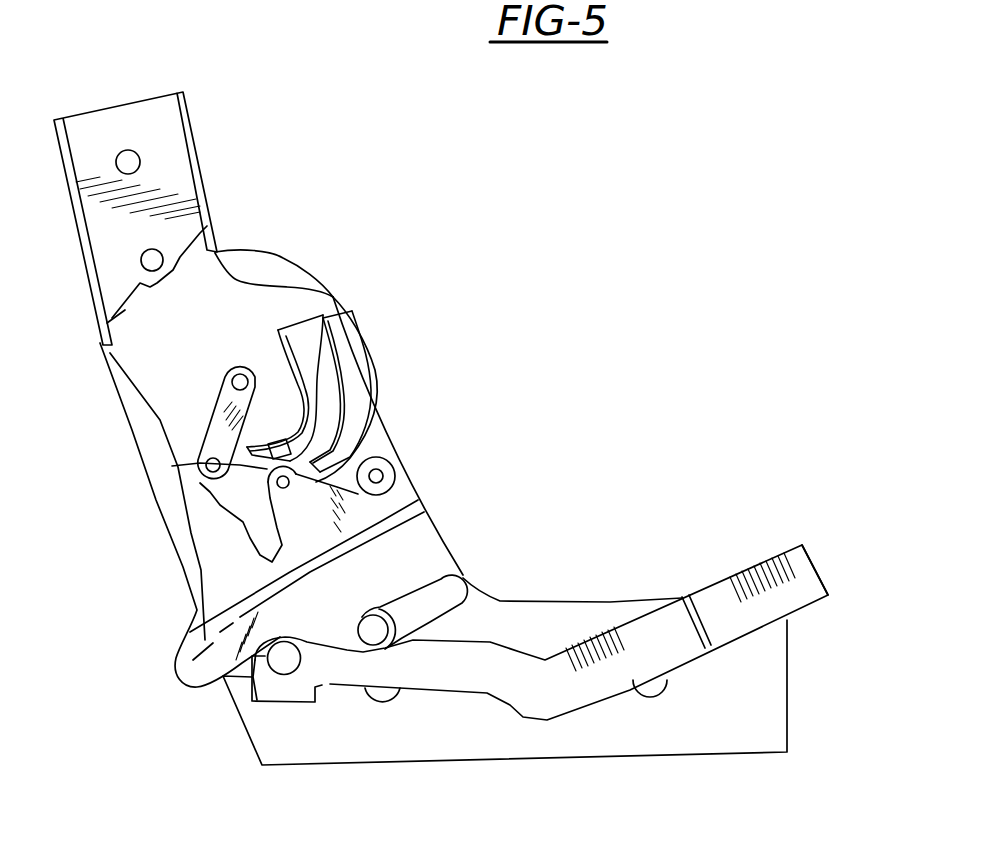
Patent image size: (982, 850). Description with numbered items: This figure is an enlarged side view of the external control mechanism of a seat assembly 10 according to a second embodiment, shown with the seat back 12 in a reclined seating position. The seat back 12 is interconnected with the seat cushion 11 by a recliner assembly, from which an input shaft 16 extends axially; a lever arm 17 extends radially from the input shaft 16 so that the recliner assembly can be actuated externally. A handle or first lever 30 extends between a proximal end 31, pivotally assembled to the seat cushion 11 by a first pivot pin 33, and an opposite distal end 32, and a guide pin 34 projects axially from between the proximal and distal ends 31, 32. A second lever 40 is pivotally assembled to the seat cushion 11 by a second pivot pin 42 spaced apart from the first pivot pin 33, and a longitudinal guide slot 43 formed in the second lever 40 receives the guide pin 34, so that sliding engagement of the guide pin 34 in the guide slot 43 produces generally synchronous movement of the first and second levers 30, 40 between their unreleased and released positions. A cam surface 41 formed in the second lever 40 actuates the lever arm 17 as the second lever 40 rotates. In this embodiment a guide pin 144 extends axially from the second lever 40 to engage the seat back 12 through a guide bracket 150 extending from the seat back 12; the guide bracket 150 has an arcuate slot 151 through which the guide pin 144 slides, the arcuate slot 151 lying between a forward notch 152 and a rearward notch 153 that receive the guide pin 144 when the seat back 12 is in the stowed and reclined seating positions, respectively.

The seat assembly 10 is at (632, 315).
The seat cushion 11 is at (565, 748).
The seat back 12 is at (204, 151).
The input shaft 16 is at (235, 381).
The lever arm 17 is at (185, 448).
The first lever 30 is at (716, 576).
The proximal end 31 is at (224, 690).
The distal end 32 is at (823, 572).
The first pivot pin 33 is at (280, 684).
The guide pin 34 is at (388, 650).
The second lever 40 is at (187, 685).
The cam surface 41 is at (227, 513).
The second pivot pin 42 is at (397, 483).
The guide slot 43 is at (460, 577).
The guide pin 144 is at (297, 488).
The guide bracket 150 is at (212, 222).
The arcuate slot 151 is at (343, 346).
The forward notch 152 is at (333, 306).
The rearward notch 153 is at (345, 470).